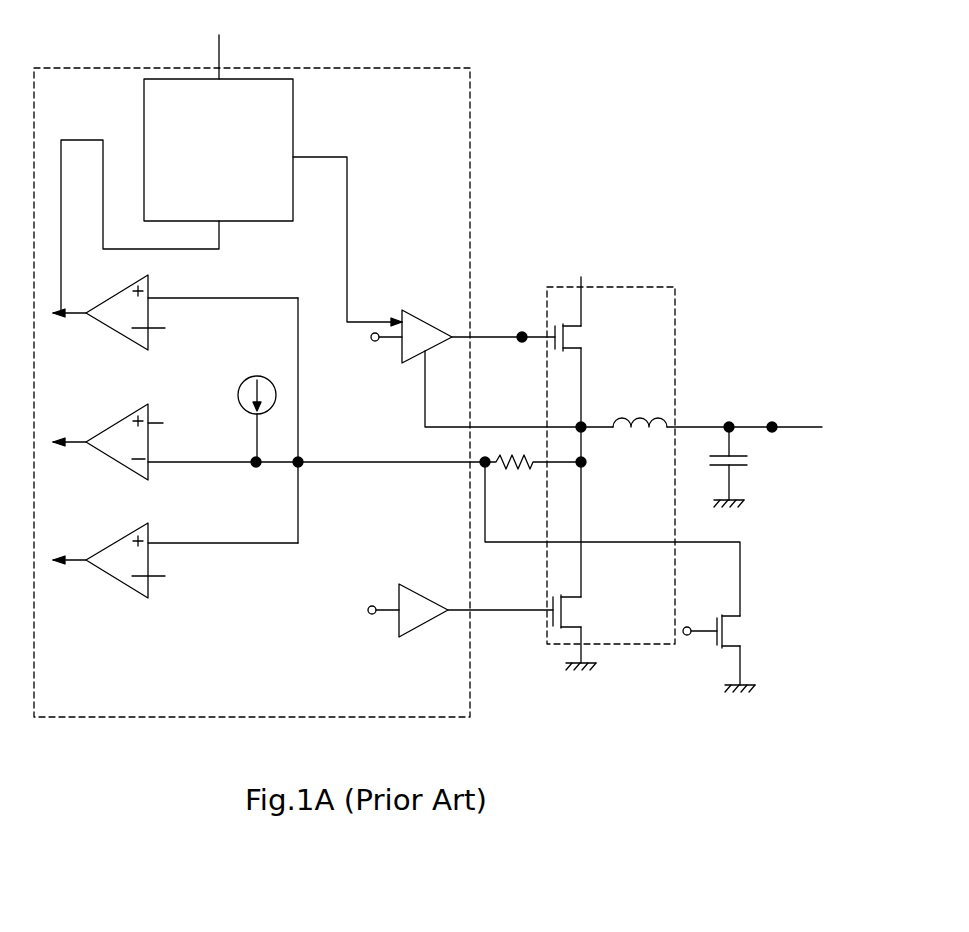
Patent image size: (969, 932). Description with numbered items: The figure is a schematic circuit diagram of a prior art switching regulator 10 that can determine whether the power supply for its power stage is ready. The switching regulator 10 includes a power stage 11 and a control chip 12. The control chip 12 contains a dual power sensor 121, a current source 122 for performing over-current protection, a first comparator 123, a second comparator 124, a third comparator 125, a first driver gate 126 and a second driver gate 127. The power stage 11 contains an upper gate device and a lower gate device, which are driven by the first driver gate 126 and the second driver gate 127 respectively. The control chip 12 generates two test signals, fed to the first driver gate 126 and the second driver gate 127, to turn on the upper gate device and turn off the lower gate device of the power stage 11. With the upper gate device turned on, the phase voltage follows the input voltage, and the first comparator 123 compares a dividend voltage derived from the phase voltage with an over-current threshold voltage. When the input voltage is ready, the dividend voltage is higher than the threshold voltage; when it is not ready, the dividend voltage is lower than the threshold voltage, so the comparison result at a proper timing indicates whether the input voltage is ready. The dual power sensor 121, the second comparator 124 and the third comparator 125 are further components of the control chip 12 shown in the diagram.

The switching regulator 10 is at (560, 140).
The power stage 11 is at (662, 632).
The control chip 12 is at (450, 696).
The dual power sensor 121 is at (237, 205).
The current source 122 is at (244, 383).
The first comparator 123 is at (128, 414).
The second comparator 124 is at (111, 296).
The third comparator 125 is at (118, 540).
The first driver gate 126 is at (416, 312).
The second driver gate 127 is at (416, 585).